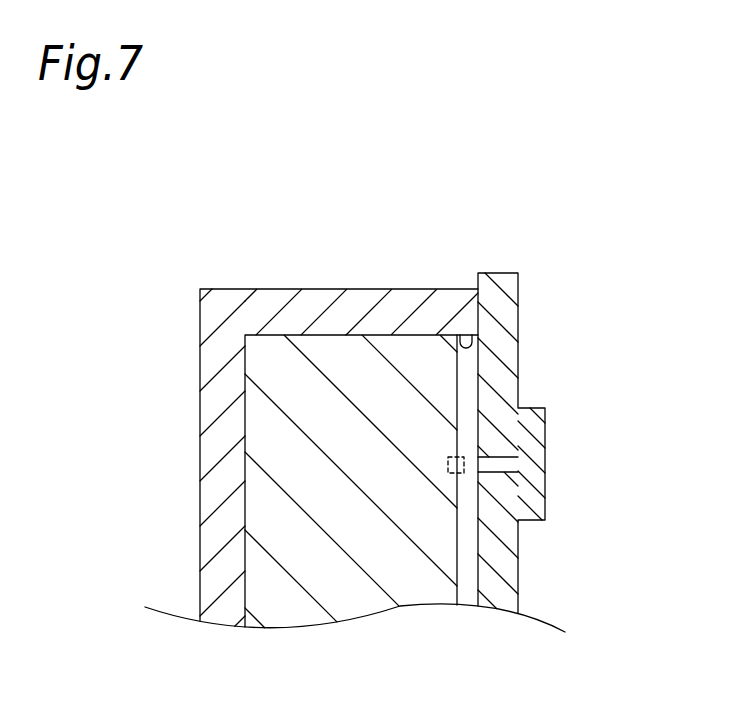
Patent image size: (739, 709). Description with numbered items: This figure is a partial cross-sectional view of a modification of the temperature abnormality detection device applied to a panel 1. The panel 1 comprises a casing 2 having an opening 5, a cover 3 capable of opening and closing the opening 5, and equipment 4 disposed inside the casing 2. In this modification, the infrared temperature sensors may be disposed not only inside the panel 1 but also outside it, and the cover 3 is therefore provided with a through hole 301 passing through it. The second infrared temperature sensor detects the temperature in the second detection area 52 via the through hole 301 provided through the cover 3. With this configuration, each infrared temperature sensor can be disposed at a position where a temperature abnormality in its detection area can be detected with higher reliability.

The panel 1 is at (423, 240).
The casing 2 is at (200, 400).
The cover 3 is at (519, 300).
The equipment 4 is at (312, 352).
The opening 5 is at (462, 335).
The second detection area 52 is at (462, 457).
The through hole 301 is at (498, 472).